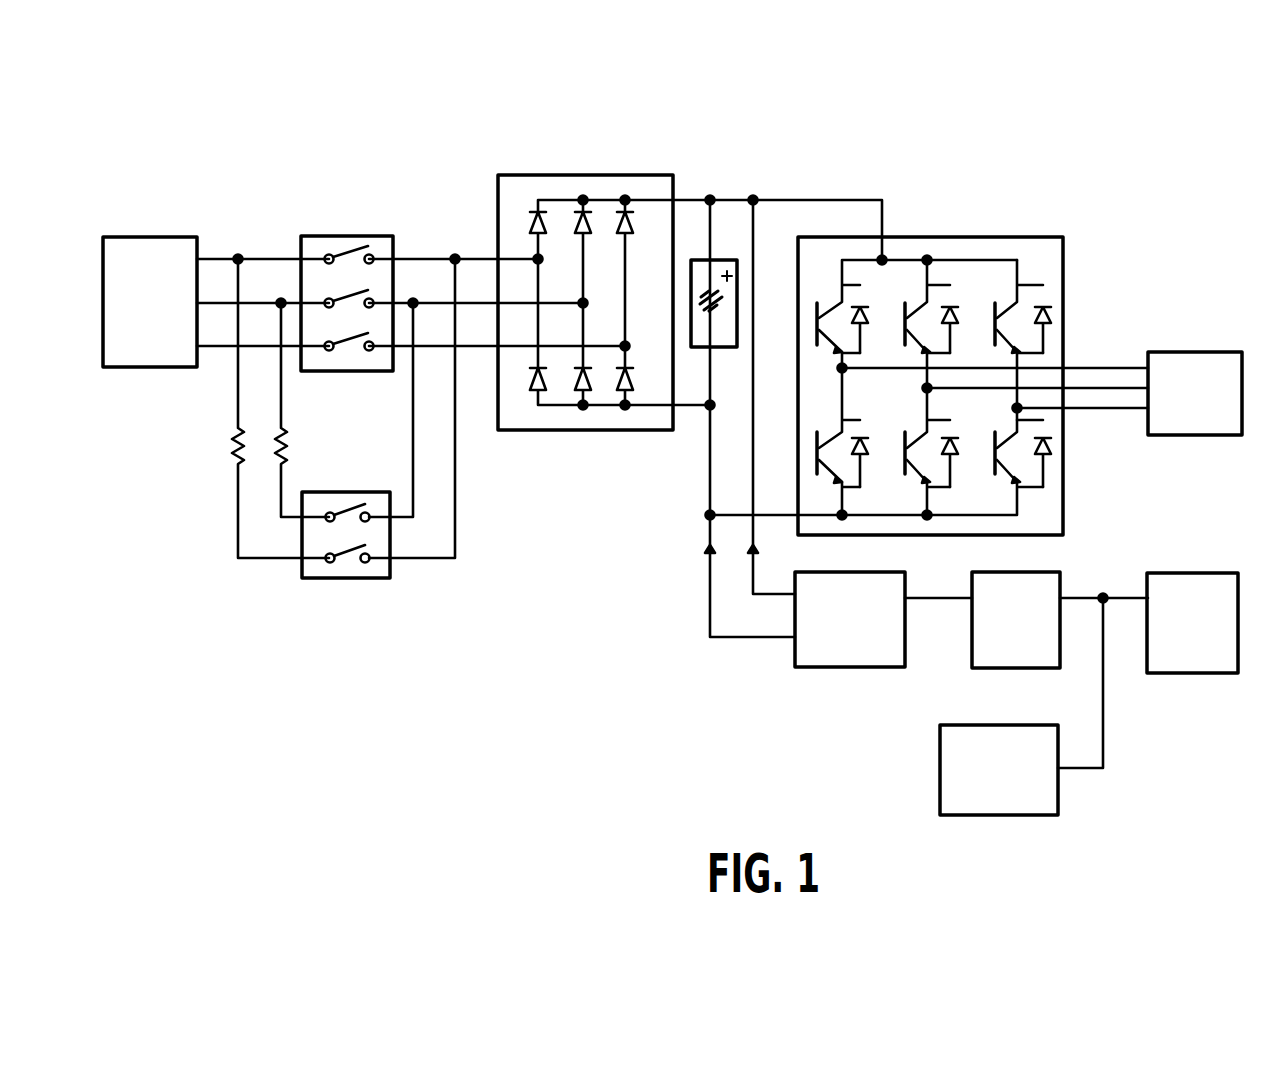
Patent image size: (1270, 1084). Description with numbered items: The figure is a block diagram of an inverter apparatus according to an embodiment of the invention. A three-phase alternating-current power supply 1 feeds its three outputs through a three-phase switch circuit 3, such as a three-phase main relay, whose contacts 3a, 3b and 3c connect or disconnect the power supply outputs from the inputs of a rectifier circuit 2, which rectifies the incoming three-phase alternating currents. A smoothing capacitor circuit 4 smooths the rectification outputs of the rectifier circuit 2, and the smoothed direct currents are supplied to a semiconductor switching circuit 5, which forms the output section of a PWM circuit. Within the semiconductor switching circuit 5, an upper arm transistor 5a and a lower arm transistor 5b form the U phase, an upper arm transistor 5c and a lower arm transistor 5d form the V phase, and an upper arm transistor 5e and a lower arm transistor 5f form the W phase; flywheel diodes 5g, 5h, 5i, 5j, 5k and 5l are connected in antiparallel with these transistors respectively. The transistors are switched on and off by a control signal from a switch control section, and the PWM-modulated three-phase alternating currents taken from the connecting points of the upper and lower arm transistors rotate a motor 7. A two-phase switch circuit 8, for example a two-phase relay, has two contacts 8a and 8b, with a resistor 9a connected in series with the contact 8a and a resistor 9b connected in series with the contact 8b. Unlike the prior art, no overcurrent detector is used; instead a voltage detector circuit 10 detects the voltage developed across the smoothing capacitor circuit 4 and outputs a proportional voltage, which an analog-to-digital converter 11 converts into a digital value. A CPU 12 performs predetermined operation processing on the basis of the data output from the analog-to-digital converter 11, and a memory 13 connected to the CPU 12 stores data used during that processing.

The three-phase alternating-current power supply 1 is at (158, 231).
The rectifier circuit 2 is at (648, 175).
The three-phase switch circuit 3 is at (340, 287).
The contact 3a is at (350, 262).
The contact 3b is at (350, 306).
The contact 3c is at (352, 349).
The smoothing capacitor circuit 4 is at (722, 258).
The semiconductor switching circuit 5 is at (929, 353).
The upper arm transistor 5a is at (812, 323).
The lower arm transistor 5b is at (812, 452).
The upper arm transistor 5c is at (898, 323).
The lower arm transistor 5d is at (898, 452).
The upper arm transistor 5e is at (988, 323).
The lower arm transistor 5f is at (988, 452).
The flywheel diode 5g is at (882, 310).
The flywheel diode 5h is at (888, 440).
The flywheel diode 5i is at (968, 312).
The flywheel diode 5j is at (978, 440).
The flywheel diode 5k is at (1058, 312).
The flywheel diode 5l is at (1056, 447).
The motor 7 is at (1200, 352).
The two-phase switch circuit 8 is at (368, 457).
The contact 8a is at (360, 541).
The contact 8b is at (352, 500).
The resistor 9a is at (230, 440).
The resistor 9b is at (288, 455).
The voltage detector circuit 10 is at (795, 665).
The analog-to-digital converter 11 is at (972, 666).
The CPU 12 is at (1183, 573).
The memory 13 is at (940, 755).